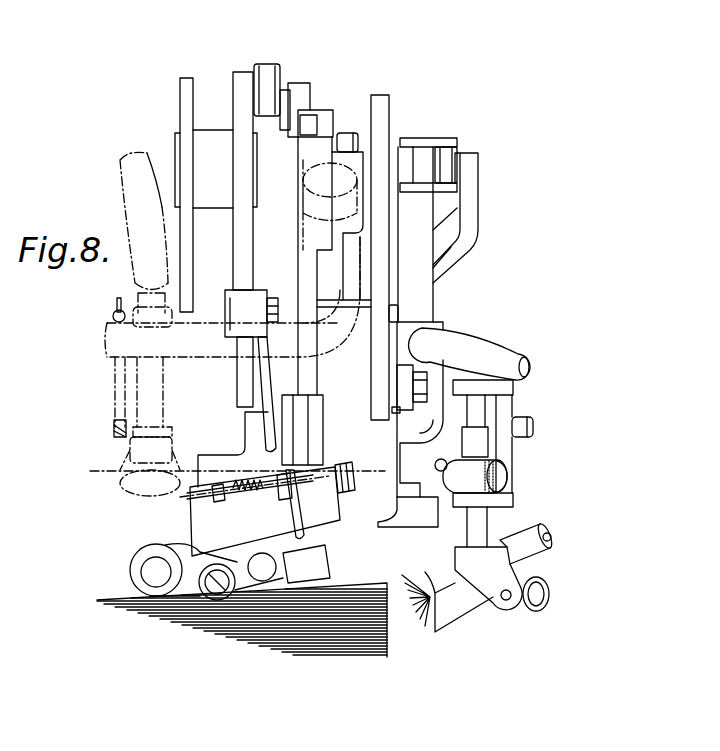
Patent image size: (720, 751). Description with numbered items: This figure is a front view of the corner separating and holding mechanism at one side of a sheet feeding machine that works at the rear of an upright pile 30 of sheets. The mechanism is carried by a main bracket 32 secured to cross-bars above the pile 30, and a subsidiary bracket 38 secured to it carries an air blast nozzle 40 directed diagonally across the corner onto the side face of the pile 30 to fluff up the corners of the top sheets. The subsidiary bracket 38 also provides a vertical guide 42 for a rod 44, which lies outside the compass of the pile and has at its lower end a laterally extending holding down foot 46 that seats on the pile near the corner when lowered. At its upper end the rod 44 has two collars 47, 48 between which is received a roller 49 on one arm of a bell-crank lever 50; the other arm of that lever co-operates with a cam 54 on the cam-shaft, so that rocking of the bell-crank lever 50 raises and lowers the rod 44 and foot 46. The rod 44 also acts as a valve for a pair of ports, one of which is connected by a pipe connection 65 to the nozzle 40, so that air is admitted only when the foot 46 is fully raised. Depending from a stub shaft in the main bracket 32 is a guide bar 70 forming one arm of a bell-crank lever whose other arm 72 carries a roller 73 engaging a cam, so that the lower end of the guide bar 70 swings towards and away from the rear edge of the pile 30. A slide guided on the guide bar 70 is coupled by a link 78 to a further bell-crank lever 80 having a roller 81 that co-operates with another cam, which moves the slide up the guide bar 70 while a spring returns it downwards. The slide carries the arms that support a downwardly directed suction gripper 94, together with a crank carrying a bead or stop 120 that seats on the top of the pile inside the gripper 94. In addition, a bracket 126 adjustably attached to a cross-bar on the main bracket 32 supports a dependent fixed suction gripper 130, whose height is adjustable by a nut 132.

The pile 30 is at (392, 628).
The main bracket 32 is at (382, 135).
The subsidiary bracket 38 is at (410, 385).
The air blast nozzle 40 is at (432, 590).
The vertical guide 42 is at (433, 322).
The rod 44 is at (425, 243).
The holding down foot 46 is at (398, 527).
The collar 47 is at (457, 191).
The collar 48 is at (445, 140).
The roller 49 is at (448, 157).
The bell-crank lever 50 is at (467, 211).
The cam 54 is at (345, 137).
The pipe connection 65 is at (505, 347).
The guide bar 70 is at (312, 370).
The arm 72 is at (320, 120).
The roller 73 is at (303, 93).
The link 78 is at (265, 392).
The bell-crank lever 80 is at (237, 374).
The roller 81 is at (266, 66).
The suction gripper 94 is at (290, 587).
The bead or stop 120 is at (193, 583).
The bracket 126 is at (207, 340).
The fixed suction gripper 130 is at (160, 487).
The nut 132 is at (113, 312).